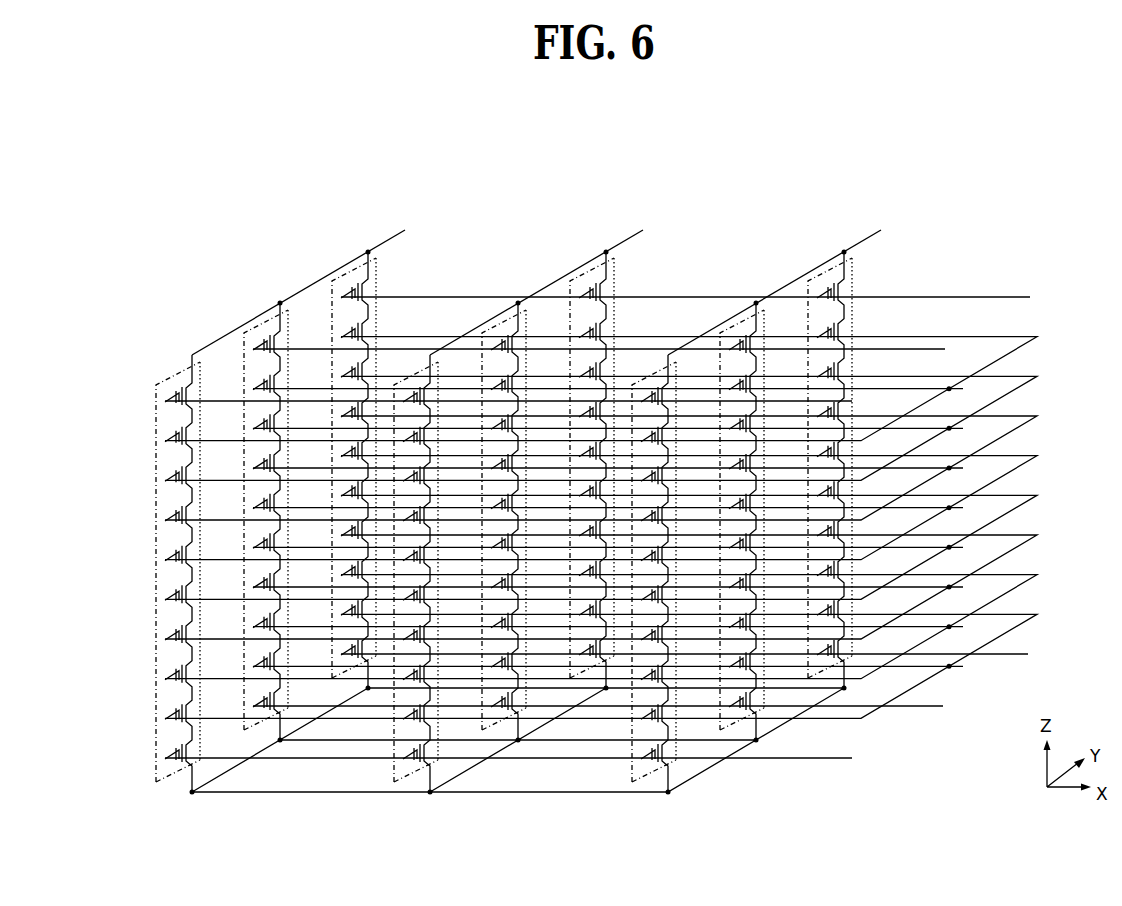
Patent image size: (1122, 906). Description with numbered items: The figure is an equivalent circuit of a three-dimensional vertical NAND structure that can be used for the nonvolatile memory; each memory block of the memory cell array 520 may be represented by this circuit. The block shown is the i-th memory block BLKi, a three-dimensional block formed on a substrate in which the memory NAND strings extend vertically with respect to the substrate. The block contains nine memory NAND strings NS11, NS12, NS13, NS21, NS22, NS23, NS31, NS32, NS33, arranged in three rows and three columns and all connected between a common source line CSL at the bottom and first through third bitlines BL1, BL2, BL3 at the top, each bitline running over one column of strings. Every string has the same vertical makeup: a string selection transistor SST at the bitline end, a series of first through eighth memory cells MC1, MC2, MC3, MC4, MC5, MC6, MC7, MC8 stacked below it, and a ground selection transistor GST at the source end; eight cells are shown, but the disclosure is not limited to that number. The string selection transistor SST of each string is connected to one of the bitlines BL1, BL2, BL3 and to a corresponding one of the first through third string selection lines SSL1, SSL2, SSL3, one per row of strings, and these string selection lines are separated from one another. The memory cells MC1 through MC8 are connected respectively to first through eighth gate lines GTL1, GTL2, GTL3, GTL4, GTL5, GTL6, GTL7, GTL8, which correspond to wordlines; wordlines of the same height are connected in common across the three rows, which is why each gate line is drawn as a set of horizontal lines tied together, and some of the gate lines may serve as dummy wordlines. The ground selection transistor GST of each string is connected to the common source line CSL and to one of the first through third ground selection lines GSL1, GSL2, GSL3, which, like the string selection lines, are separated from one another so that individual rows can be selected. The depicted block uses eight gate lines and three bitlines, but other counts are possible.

The memory cell array 520 is at (831, 146).
The i-th memory block BLKi is at (666, 185).
The memory NAND string NS11 is at (175, 377).
The memory NAND string NS12 is at (418, 370).
The memory NAND string NS13 is at (656, 370).
The memory NAND string NS21 is at (263, 325).
The memory NAND string NS22 is at (501, 325).
The memory NAND string NS23 is at (739, 325).
The memory NAND string NS31 is at (351, 273).
The memory NAND string NS32 is at (589, 273).
The memory NAND string NS33 is at (827, 273).
The first bitline BL1 is at (317, 282).
The second bitline BL2 is at (555, 282).
The third bitline BL3 is at (793, 282).
The first string selection line SSL1 is at (532, 401).
The second string selection line SSL2 is at (622, 349).
The third string selection line SSL3 is at (709, 297).
The first ground selection line GSL1 is at (533, 758).
The second ground selection line GSL2 is at (622, 706).
The third ground selection line GSL3 is at (710, 654).
The first gate line GTL1 is at (601, 666).
The second gate line GTL2 is at (601, 627).
The third gate line GTL3 is at (601, 587).
The fourth gate line GTL4 is at (601, 547).
The fifth gate line GTL5 is at (601, 508).
The sixth gate line GTL6 is at (601, 468).
The seventh gate line GTL7 is at (601, 428).
The eighth gate line GTL8 is at (601, 389).
The common source line CSL is at (518, 740).
The string selection transistor SST is at (157, 401).
The ground selection transistor GST is at (157, 758).
The first memory cell MC1 is at (157, 718).
The second memory cell MC2 is at (157, 679).
The third memory cell MC3 is at (157, 639).
The fourth memory cell MC4 is at (157, 599).
The fifth memory cell MC5 is at (157, 560).
The sixth memory cell MC6 is at (157, 520).
The seventh memory cell MC7 is at (157, 480).
The eighth memory cell MC8 is at (157, 441).